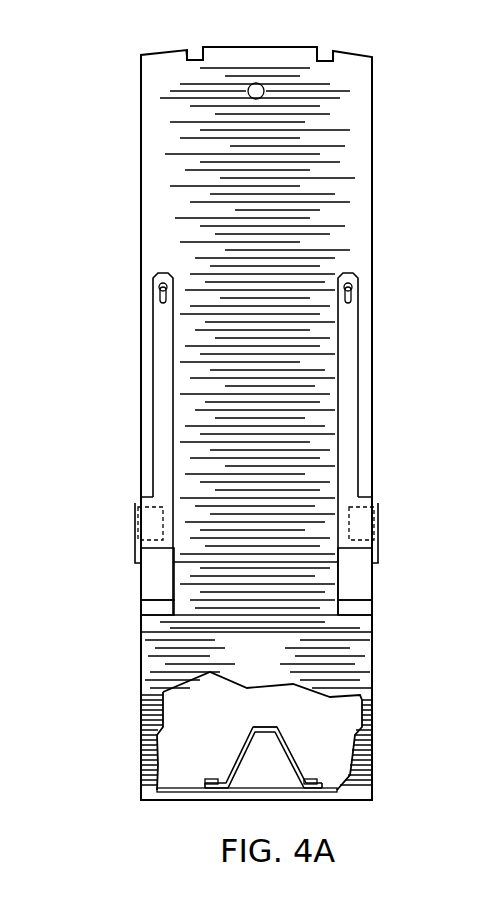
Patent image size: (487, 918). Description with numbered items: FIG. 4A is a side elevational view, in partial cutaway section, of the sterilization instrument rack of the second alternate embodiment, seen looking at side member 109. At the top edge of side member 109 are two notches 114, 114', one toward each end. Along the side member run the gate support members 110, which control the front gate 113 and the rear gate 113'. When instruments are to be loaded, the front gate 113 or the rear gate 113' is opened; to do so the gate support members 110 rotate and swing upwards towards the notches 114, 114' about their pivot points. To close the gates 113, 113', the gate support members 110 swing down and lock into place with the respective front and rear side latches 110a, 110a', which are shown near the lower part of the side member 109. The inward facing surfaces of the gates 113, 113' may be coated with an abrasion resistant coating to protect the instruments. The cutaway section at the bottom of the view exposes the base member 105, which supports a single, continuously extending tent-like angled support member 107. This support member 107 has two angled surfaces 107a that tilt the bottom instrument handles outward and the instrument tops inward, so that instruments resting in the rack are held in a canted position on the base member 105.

The side member 109 is at (347, 134).
The notch 114 is at (144, 43).
The notch 114' is at (354, 43).
The gate support member 110 is at (165, 352).
The front gate 113 is at (115, 507).
The rear gate 113' is at (399, 514).
The front side latch 110a is at (109, 578).
The rear side latch 110a' is at (403, 581).
The angled support member 107 is at (287, 735).
The angled surface 107a is at (293, 758).
The base member 105 is at (330, 800).